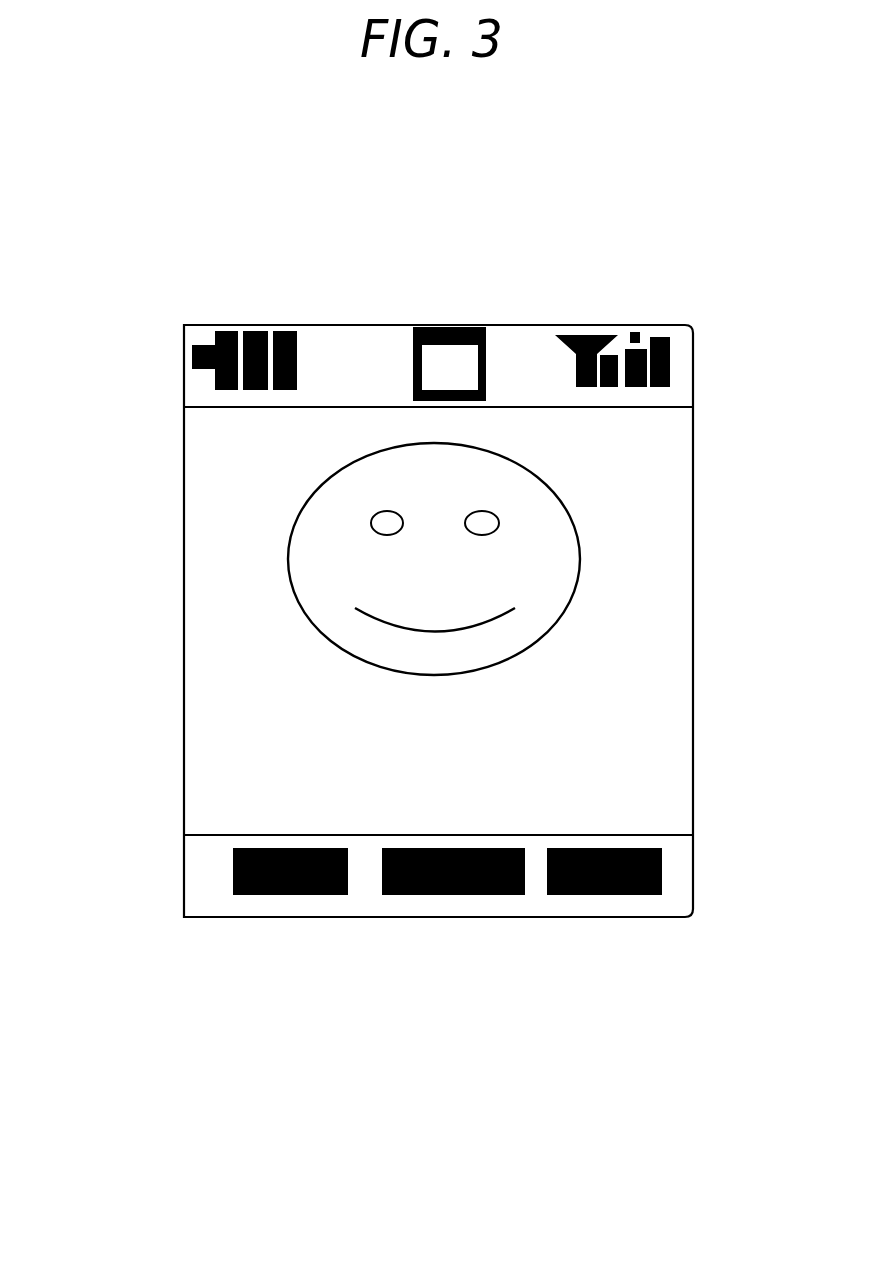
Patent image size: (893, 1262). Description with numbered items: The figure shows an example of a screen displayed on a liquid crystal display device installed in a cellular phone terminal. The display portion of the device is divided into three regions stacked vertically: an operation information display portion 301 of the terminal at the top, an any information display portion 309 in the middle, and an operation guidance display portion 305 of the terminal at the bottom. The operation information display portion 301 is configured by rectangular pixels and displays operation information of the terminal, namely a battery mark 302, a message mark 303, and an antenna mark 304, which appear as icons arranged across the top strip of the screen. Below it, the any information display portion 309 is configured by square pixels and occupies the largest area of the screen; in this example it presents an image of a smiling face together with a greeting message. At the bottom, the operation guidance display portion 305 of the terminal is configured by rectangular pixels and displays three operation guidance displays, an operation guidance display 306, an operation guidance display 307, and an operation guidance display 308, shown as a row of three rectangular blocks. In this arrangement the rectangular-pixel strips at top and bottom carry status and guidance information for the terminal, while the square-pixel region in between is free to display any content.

The operation information display portion 301 is at (693, 325).
The battery mark 302 is at (220, 333).
The message mark 303 is at (413, 327).
The antenna mark 304 is at (634, 336).
The operation guidance display portion 305 is at (693, 835).
The operation guidance display 306 is at (300, 895).
The operation guidance display 307 is at (437, 895).
The operation guidance display 308 is at (607, 895).
The any information display portion 309 is at (693, 407).